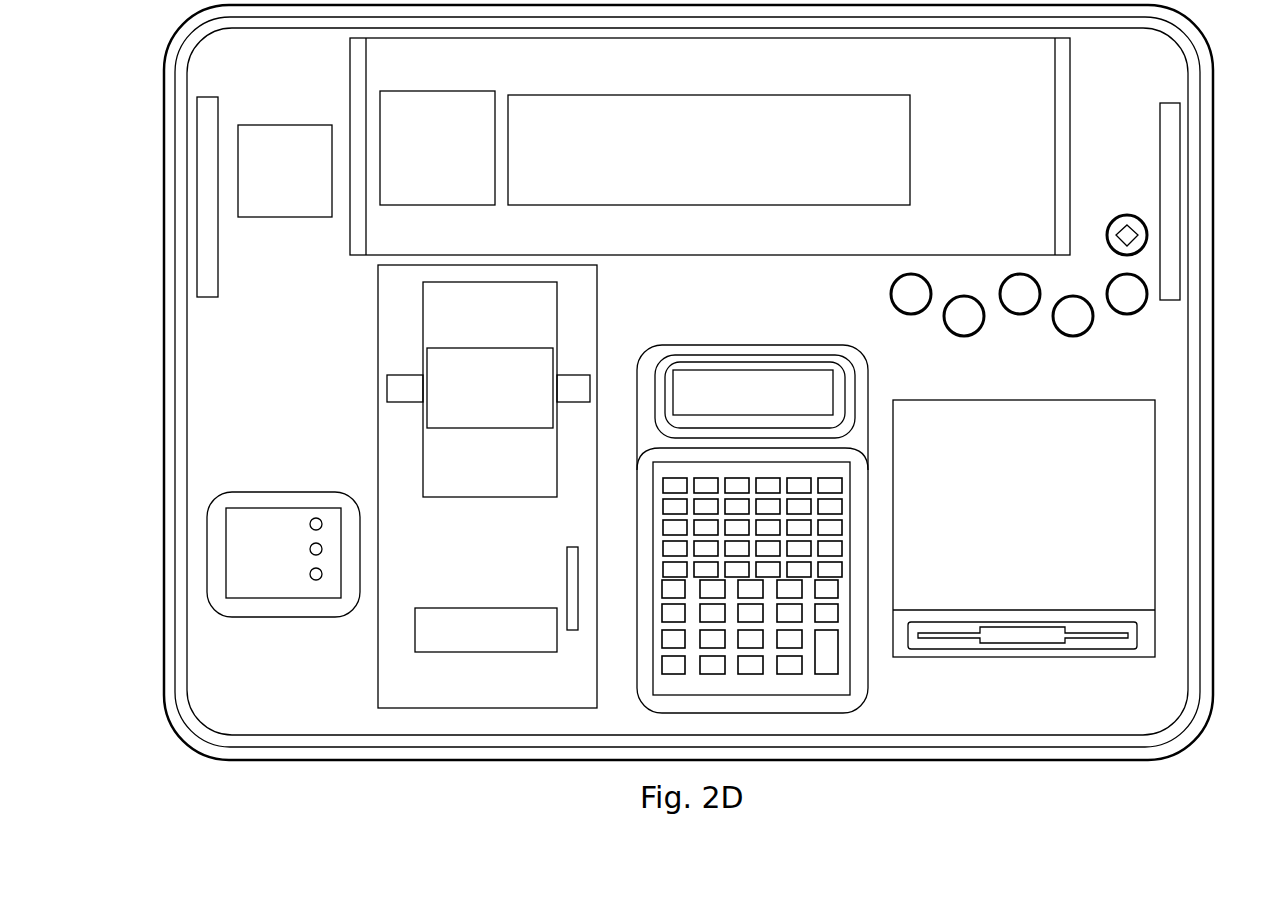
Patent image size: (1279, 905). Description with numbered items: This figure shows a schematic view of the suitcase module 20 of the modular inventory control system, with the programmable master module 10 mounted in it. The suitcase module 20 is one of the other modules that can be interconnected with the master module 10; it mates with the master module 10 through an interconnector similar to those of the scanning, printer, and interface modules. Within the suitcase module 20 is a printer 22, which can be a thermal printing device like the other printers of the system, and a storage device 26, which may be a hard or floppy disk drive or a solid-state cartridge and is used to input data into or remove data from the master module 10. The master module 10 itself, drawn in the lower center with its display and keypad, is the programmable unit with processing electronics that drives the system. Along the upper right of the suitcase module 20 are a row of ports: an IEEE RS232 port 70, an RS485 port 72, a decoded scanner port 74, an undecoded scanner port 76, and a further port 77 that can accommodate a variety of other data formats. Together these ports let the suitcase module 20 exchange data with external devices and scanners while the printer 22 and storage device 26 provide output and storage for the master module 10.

The master module 10 is at (858, 697).
The suitcase module 20 is at (1232, 117).
The printer 22 is at (378, 362).
The storage device 26 is at (1043, 634).
The RS232 port 70 is at (892, 290).
The RS485 port 72 is at (957, 299).
The decoded scanner port 74 is at (1038, 292).
The undecoded scanner port 76 is at (1085, 300).
The port 77 is at (1117, 280).